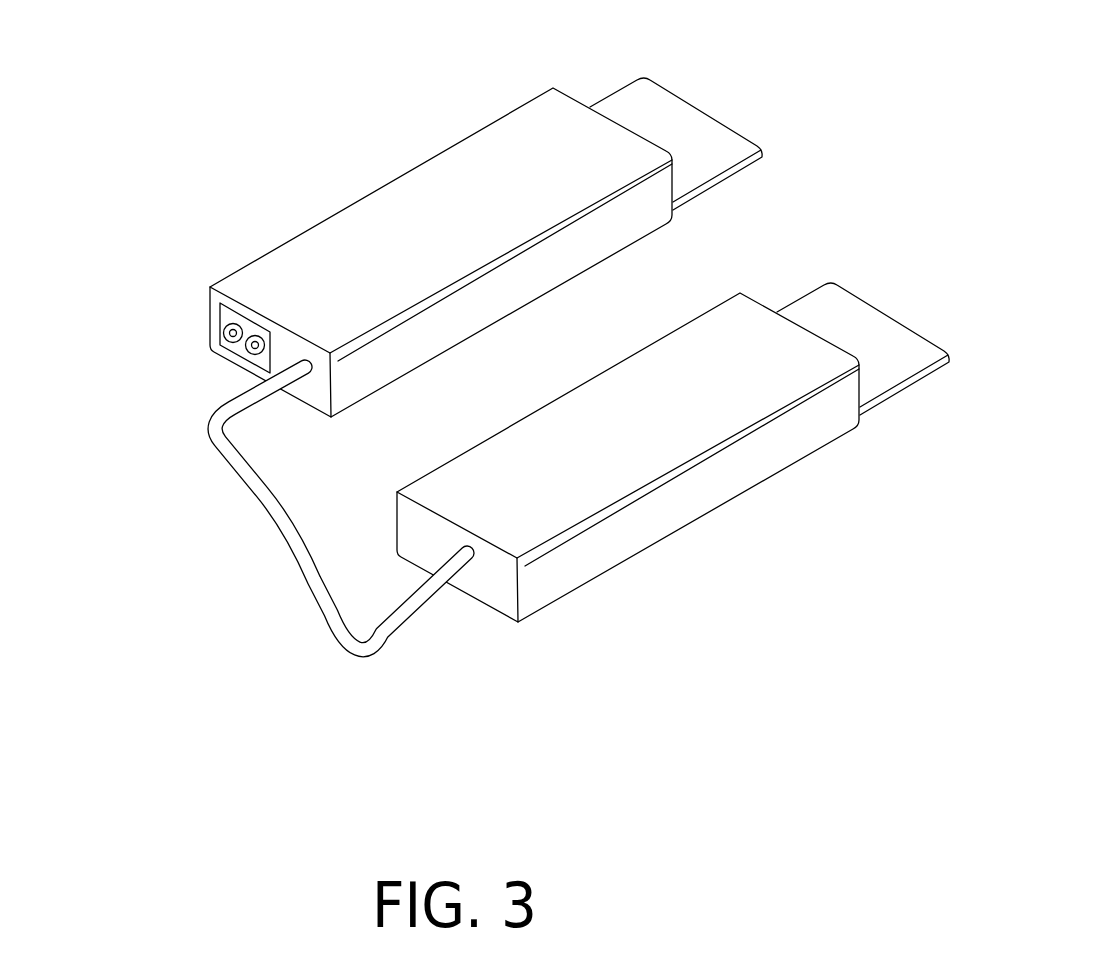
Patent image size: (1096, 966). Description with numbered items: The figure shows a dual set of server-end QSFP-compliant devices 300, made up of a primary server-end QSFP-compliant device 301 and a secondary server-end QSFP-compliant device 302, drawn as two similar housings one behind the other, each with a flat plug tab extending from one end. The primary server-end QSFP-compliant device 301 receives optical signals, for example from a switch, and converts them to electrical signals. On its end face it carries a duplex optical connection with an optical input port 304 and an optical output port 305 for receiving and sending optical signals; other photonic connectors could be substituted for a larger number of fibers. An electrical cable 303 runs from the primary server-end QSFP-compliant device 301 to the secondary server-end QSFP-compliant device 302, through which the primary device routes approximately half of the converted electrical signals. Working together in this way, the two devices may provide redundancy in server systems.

The dual set of server-end QSFP-compliant devices 300 is at (118, 77).
The primary server-end QSFP-compliant device 301 is at (442, 243).
The secondary server-end QSFP-compliant device 302 is at (620, 455).
The electrical cable 303 is at (360, 645).
The optical input port 304 is at (214, 332).
The optical output port 305 is at (232, 357).